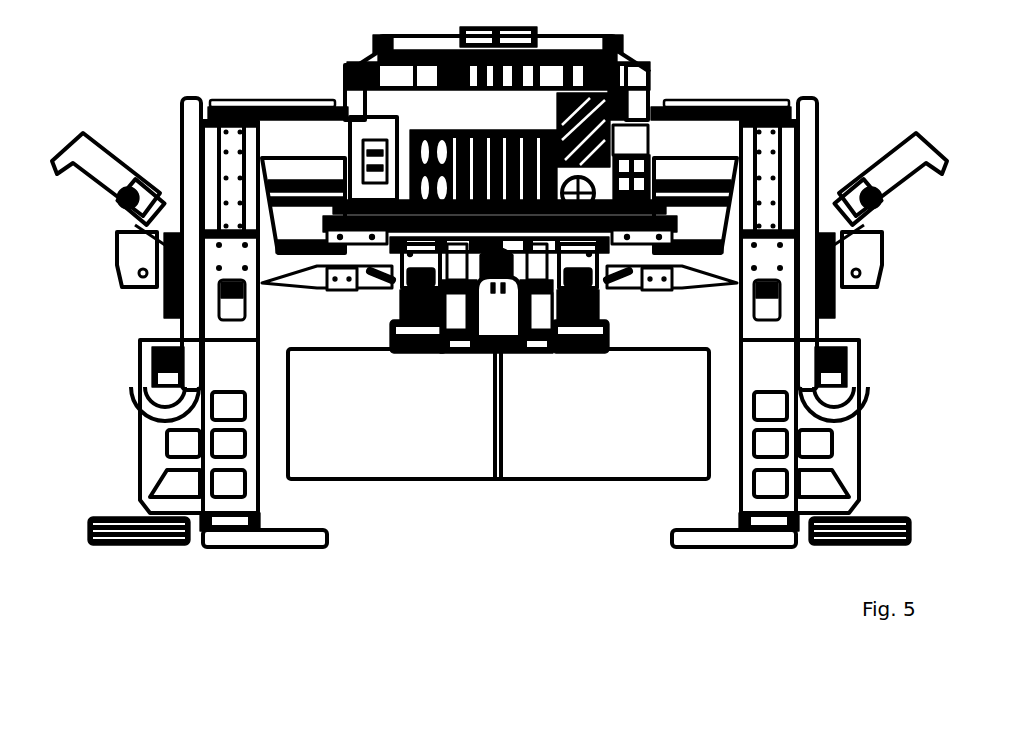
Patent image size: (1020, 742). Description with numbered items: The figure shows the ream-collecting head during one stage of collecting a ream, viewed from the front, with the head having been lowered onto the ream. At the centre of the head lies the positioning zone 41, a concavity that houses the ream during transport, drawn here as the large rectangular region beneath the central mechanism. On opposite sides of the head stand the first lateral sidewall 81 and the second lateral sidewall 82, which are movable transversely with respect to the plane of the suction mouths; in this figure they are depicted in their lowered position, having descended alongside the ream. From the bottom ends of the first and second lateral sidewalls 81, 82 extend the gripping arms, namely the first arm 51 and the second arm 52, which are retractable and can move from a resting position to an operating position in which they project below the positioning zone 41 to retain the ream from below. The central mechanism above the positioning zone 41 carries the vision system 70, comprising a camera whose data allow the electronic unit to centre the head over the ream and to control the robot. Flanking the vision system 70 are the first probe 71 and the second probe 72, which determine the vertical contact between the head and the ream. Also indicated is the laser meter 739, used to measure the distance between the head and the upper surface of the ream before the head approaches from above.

The positioning zone 41 is at (462, 514).
The first arm 51 is at (258, 553).
The second arm 52 is at (741, 554).
The vision system 70 is at (510, 353).
The first probe 71 is at (465, 357).
The second probe 72 is at (540, 360).
The first lateral sidewall 81 is at (143, 424).
The second lateral sidewall 82 is at (858, 421).
The laser meter 739 is at (375, 218).